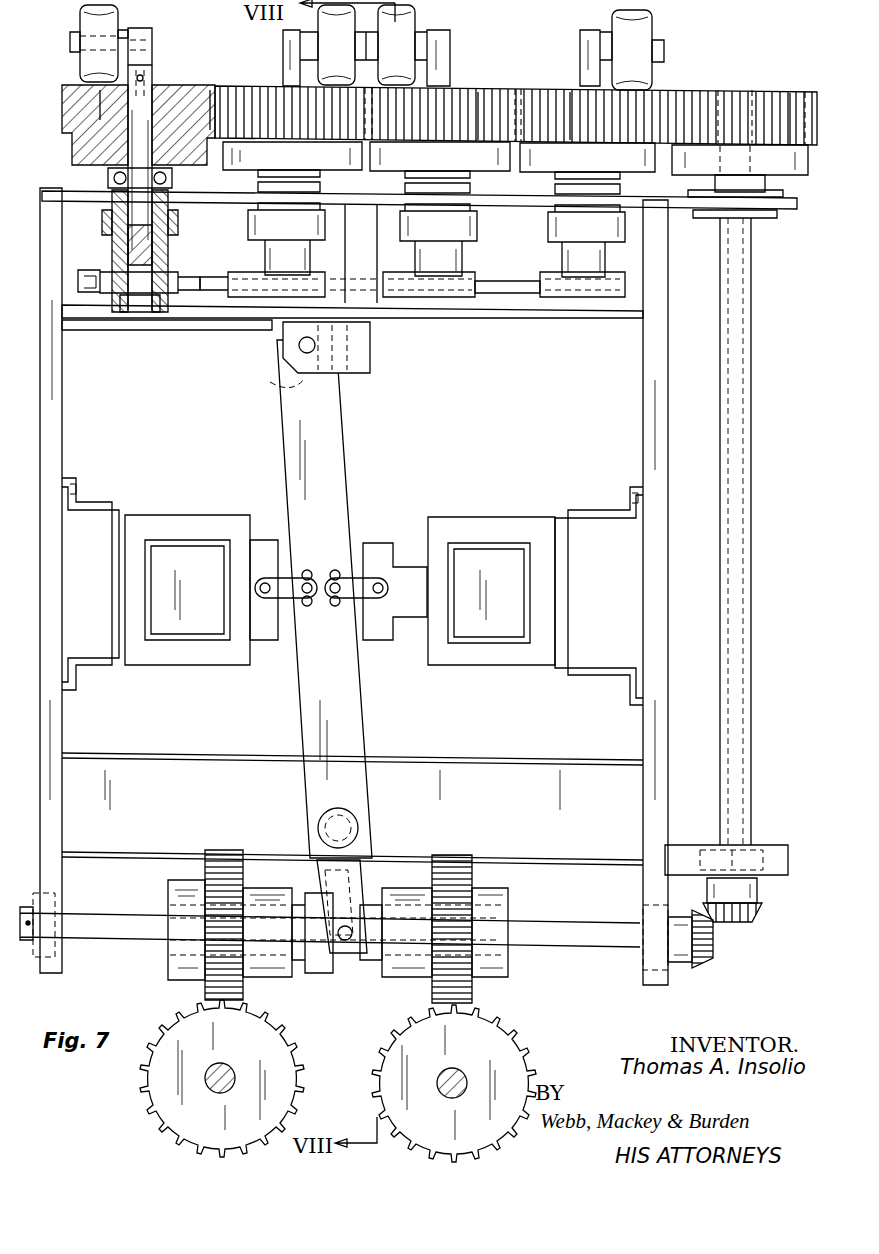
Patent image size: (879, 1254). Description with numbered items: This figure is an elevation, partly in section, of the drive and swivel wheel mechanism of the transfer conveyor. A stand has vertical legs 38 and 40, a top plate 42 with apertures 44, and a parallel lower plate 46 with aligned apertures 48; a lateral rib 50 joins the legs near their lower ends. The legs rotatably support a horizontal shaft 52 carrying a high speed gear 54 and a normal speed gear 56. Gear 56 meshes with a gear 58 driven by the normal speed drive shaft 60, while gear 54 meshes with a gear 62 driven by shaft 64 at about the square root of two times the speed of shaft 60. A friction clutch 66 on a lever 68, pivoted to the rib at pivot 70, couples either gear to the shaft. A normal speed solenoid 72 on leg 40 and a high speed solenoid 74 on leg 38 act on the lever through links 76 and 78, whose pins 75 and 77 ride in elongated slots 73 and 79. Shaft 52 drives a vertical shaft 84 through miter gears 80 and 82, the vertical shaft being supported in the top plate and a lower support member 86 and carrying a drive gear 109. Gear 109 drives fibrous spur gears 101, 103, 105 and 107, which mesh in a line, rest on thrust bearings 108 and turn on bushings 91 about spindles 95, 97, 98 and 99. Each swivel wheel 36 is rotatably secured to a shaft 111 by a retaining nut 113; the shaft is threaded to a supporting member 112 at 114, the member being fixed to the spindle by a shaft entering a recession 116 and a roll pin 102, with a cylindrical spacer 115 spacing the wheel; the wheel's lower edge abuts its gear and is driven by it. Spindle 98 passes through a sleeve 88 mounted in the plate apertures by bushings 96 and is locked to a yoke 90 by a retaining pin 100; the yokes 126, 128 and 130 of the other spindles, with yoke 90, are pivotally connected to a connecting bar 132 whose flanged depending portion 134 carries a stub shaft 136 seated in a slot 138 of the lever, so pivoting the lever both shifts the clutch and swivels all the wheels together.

The swivel wheel 36 is at (88, 22).
The vertical leg 38 is at (62, 430).
The vertical leg 40 is at (660, 368).
The top plate 42 is at (788, 213).
The aperture 44 is at (180, 195).
The lower plate 46 is at (500, 320).
The aperture 48 is at (170, 320).
The lateral rib 50 is at (560, 762).
The horizontal shaft 52 is at (130, 940).
The high speed gear 54 is at (226, 850).
The normal speed gear 56 is at (462, 855).
The gear 58 is at (494, 1032).
The normal speed drive shaft 60 is at (460, 1068).
The gear 62 is at (290, 1050).
The shaft 64 is at (228, 1066).
The friction clutch 66 is at (365, 973).
The lever 68 is at (338, 453).
The pivot 70 is at (360, 820).
The normal speed solenoid 72 is at (452, 660).
The elongated slot 73 is at (338, 575).
The high speed solenoid 74 is at (188, 660).
The pin 75 is at (335, 605).
The link 76 is at (366, 640).
The pin 77 is at (310, 605).
The link 78 is at (262, 641).
The elongated slot 79 is at (307, 572).
The miter gear 80 is at (710, 960).
The miter gear 82 is at (758, 922).
The vertical shaft 84 is at (752, 580).
The lower support member 86 is at (778, 845).
The sleeve 88 is at (168, 248).
The yoke 90 is at (178, 268).
The bushing 91 is at (118, 125).
The spindle 95 is at (284, 44).
The bushing 96 is at (104, 210).
The spindle 97 is at (451, 52).
The spindle 98 is at (154, 115).
The spindle 99 is at (586, 30).
The retaining pin 100 is at (140, 314).
The spur type gear 101 is at (208, 88).
The roll pin 102 is at (126, 98).
The spur type gear 103 is at (270, 86).
The spur type gear 105 is at (480, 95).
The spur type gear 107 is at (572, 96).
The thrust bearing 108 is at (108, 180).
The drive gear 109 is at (805, 80).
The shaft 111 is at (86, 55).
The supporting member 112 is at (150, 30).
The retaining nut 113 is at (70, 46).
The threaded connection 114 is at (152, 45).
The cylindrical spacer 115 is at (124, 30).
The recession 116 is at (150, 96).
The yoke 126 is at (272, 298).
The yoke 128 is at (430, 298).
The yoke 130 is at (590, 298).
The connecting bar 132 is at (508, 281).
The flanged depending portion 134 is at (372, 362).
The stub shaft 136 is at (298, 347).
The slot 138 is at (282, 389).